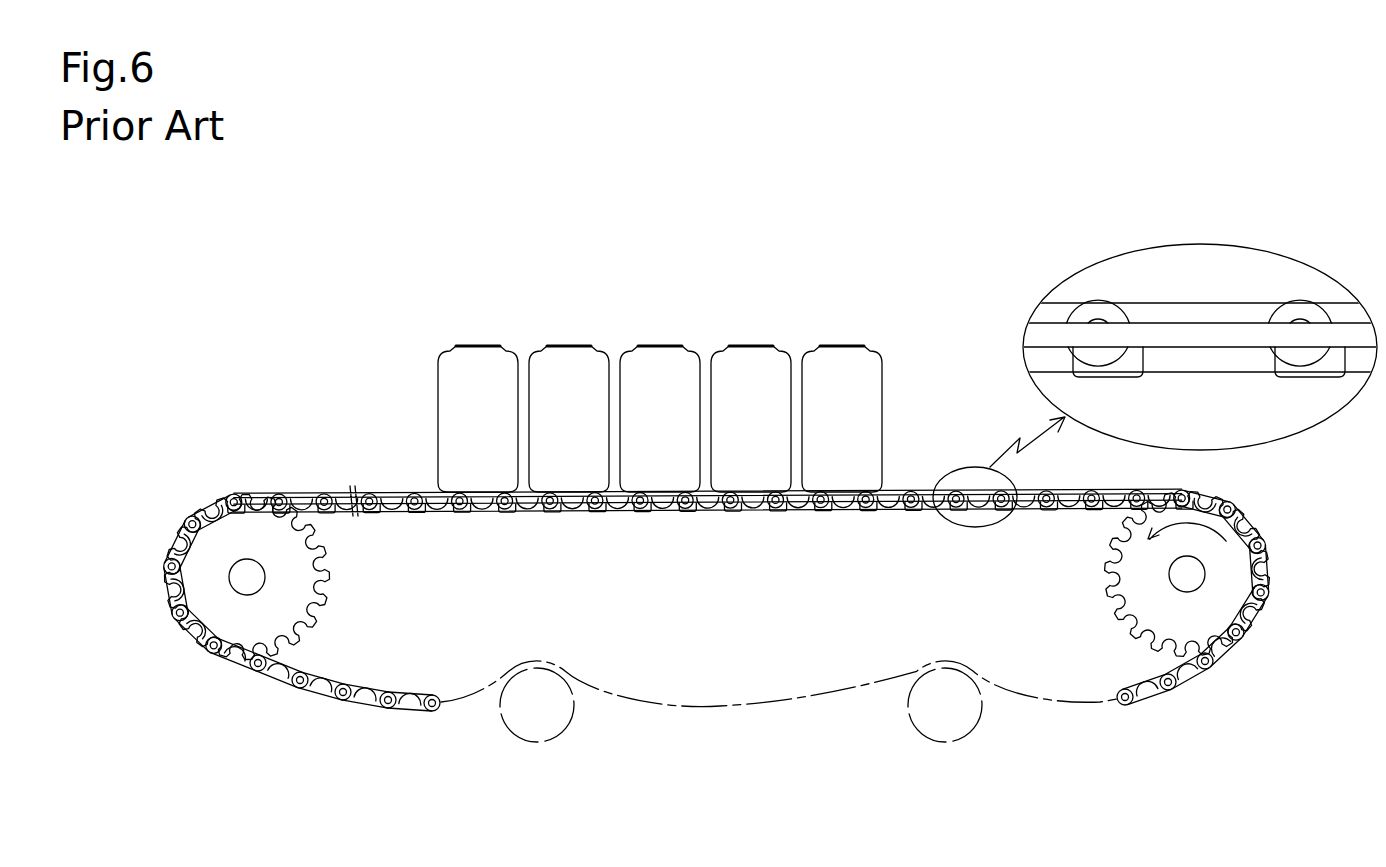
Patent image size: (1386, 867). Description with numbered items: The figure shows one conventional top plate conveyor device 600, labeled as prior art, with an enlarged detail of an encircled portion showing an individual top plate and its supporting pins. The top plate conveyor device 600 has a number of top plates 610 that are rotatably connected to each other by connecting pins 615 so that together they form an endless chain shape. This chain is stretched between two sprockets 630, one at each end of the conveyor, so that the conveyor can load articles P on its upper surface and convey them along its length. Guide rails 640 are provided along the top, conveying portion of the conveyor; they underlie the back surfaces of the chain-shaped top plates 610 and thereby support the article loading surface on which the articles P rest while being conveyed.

The top plate conveyor device 600 is at (801, 284).
The top plates 610 is at (1190, 668).
The connecting pins 615 is at (1217, 668).
The sprockets 630 is at (250, 526).
The guide rails 640 is at (847, 496).
The product (can) P is at (570, 357).